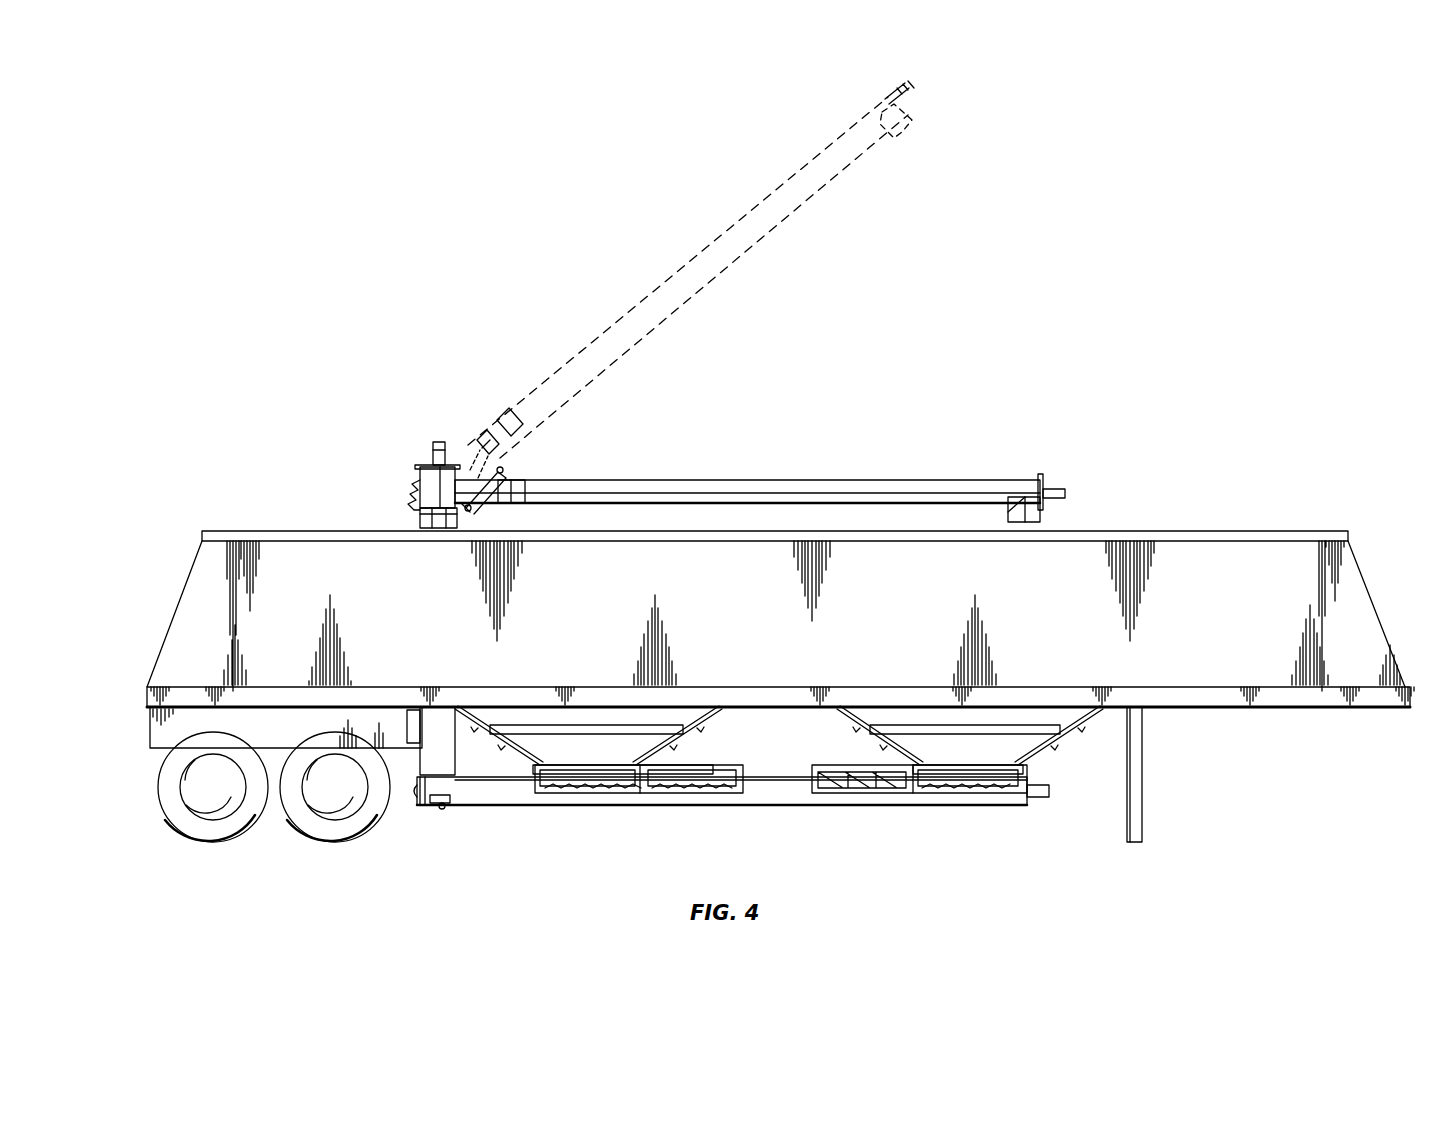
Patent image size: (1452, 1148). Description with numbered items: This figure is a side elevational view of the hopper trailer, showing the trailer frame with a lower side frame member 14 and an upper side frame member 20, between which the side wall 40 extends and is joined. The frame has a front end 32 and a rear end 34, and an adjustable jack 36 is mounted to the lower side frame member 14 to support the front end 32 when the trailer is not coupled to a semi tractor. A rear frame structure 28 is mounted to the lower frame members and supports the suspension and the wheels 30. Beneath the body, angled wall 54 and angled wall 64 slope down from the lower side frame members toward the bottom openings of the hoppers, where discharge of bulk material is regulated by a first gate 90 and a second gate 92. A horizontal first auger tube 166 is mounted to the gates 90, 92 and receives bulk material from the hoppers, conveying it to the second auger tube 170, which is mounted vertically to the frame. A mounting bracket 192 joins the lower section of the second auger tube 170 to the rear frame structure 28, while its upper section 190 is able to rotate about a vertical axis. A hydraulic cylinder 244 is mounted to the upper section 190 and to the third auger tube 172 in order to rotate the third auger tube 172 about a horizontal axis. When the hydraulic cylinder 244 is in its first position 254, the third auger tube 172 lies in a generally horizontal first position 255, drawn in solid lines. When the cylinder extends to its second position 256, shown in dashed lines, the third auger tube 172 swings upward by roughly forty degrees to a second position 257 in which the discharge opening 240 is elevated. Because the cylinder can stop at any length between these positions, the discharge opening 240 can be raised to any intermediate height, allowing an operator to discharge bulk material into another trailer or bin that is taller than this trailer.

The lower side frame member 14 is at (1295, 695).
The upper side frame member 20 is at (1250, 528).
The rear frame structure 28 is at (383, 726).
The wheels 30 is at (296, 814).
The front end 32 is at (1393, 735).
The rear end 34 is at (148, 660).
The adjustable jack 36 is at (1135, 825).
The side wall 40 is at (738, 604).
The angled wall 54 is at (1030, 743).
The angled wall 64 is at (604, 745).
The first gate 90 is at (1004, 792).
The second gate 92 is at (569, 795).
The first auger tube 166 is at (774, 795).
The second auger tube 170 is at (428, 490).
The third auger tube 172 is at (840, 480).
The upper section 190 is at (420, 522).
The mounting bracket 192 is at (445, 740).
The discharge opening 240 is at (912, 138).
The hydraulic cylinder 244 is at (504, 488).
The first position 254 is at (538, 492).
The first position 255 is at (742, 480).
The second position 256 is at (470, 441).
The second position 257 is at (818, 152).